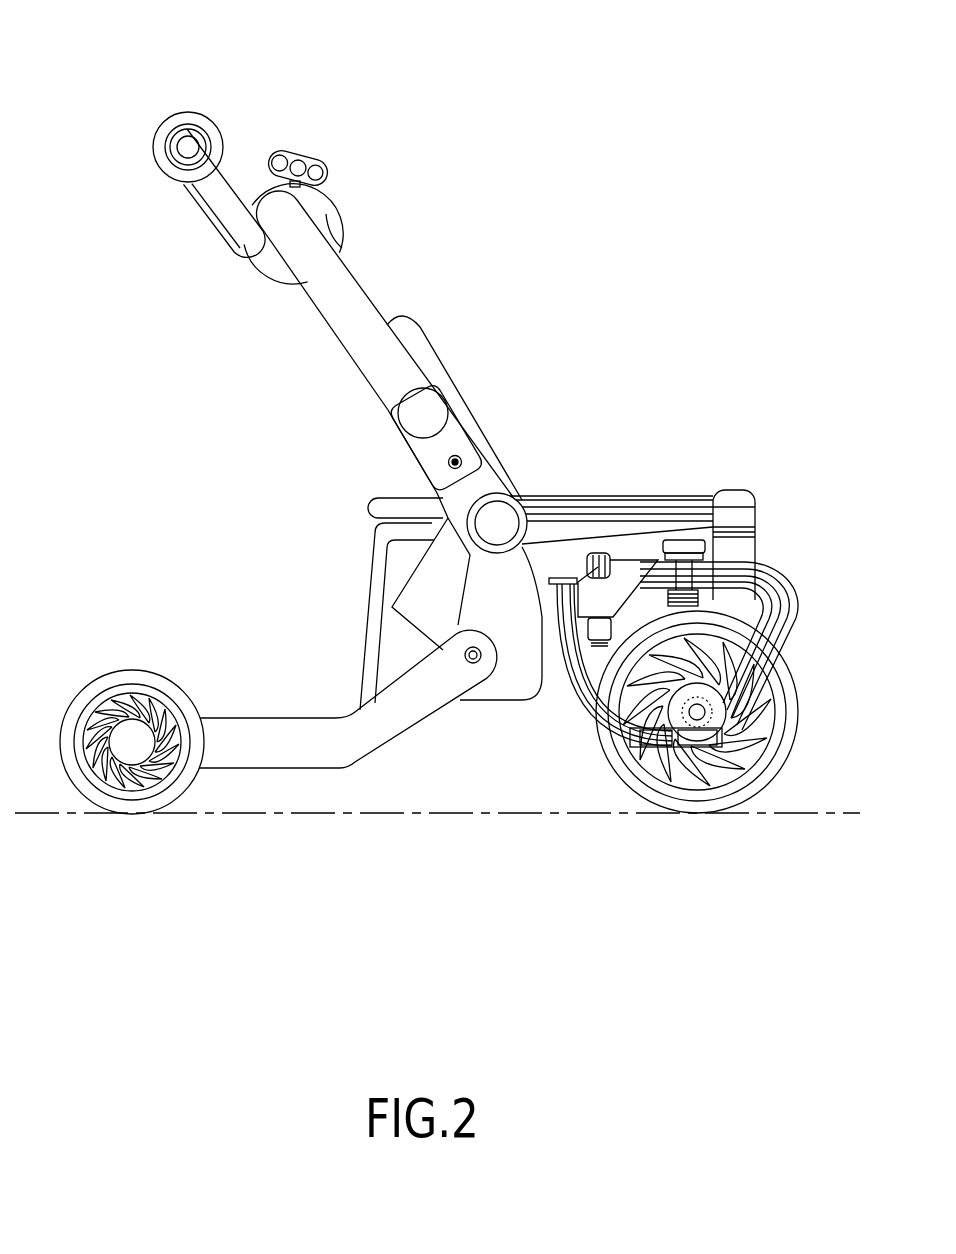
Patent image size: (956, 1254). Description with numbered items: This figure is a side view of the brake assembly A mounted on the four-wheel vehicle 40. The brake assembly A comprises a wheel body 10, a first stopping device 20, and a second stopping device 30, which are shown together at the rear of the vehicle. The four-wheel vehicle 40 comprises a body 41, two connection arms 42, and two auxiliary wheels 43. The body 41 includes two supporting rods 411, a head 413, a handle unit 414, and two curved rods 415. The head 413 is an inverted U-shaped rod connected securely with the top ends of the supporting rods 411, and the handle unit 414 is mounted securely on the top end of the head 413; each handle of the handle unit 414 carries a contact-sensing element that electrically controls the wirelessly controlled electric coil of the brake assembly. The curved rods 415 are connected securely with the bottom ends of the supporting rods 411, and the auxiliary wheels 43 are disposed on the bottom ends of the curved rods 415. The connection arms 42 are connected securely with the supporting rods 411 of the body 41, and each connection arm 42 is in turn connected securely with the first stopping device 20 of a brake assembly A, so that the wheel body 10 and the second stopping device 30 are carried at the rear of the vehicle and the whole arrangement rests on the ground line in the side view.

The four-wheel vehicle 40 is at (416, 108).
The body 41 is at (459, 325).
The supporting rods 411 is at (479, 605).
The head 413 is at (351, 281).
The handle unit 414 is at (212, 215).
The curved rods 415 is at (320, 730).
The connection arms 42 is at (598, 495).
The auxiliary wheels 43 is at (140, 683).
The wheel body 10 is at (606, 758).
The first stopping device 20 is at (786, 573).
The second stopping device 30 is at (567, 702).
The brake assembly A is at (768, 801).